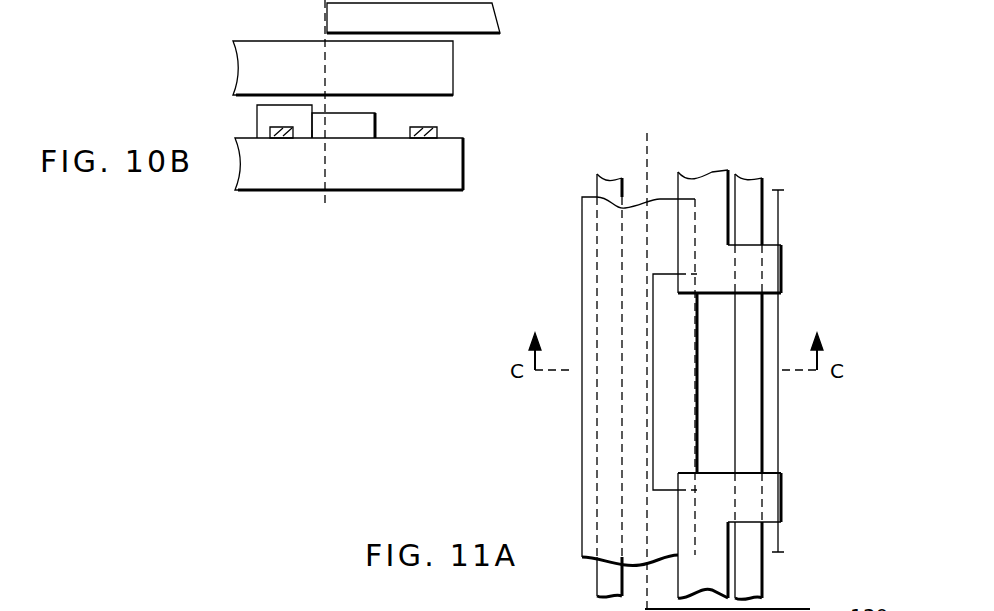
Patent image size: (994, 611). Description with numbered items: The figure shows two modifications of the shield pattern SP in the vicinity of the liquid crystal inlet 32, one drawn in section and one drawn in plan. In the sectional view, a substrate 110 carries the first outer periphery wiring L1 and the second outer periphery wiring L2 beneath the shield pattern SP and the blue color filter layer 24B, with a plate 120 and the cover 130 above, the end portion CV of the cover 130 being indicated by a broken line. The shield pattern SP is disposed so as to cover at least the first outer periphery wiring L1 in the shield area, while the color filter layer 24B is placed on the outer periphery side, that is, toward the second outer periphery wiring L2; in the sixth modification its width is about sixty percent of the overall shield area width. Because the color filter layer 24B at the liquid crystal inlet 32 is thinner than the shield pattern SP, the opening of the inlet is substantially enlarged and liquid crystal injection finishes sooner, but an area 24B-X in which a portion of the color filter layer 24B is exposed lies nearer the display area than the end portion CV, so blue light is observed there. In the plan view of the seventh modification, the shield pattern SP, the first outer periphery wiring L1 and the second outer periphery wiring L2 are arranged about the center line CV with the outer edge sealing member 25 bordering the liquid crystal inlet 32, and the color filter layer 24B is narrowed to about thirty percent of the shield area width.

In FIG. 10B, the cover 130 is at (490, 17).
In FIG. 10B, the intermediate plate 120 is at (446, 68).
In FIG. 10B, the substrate 110 is at (456, 161).
In FIG. 10B, the shield pattern SP is at (257, 112).
In FIG. 11A, the shield pattern SP is at (582, 508).
In FIG. 10B, the blue color filter layer 24B is at (349, 140).
In FIG. 11A, the blue color filter layer 24B is at (686, 414).
In FIG. 10B, the exposed area of the color filter layer 24B-X is at (325, 143).
In FIG. 10B, the first outer periphery wiring L1 is at (281, 138).
In FIG. 11A, the first outer periphery wiring L1 is at (610, 183).
In FIG. 10B, the second outer periphery wiring L2 is at (423, 138).
In FIG. 11A, the second outer periphery wiring L2 is at (749, 183).
In FIG. 11A, the end portion of the cover CV is at (651, 359).
In FIG. 11A, the outer edge sealing member 25 is at (703, 183).
In FIG. 11A, the liquid crystal inlet 32 is at (781, 318).